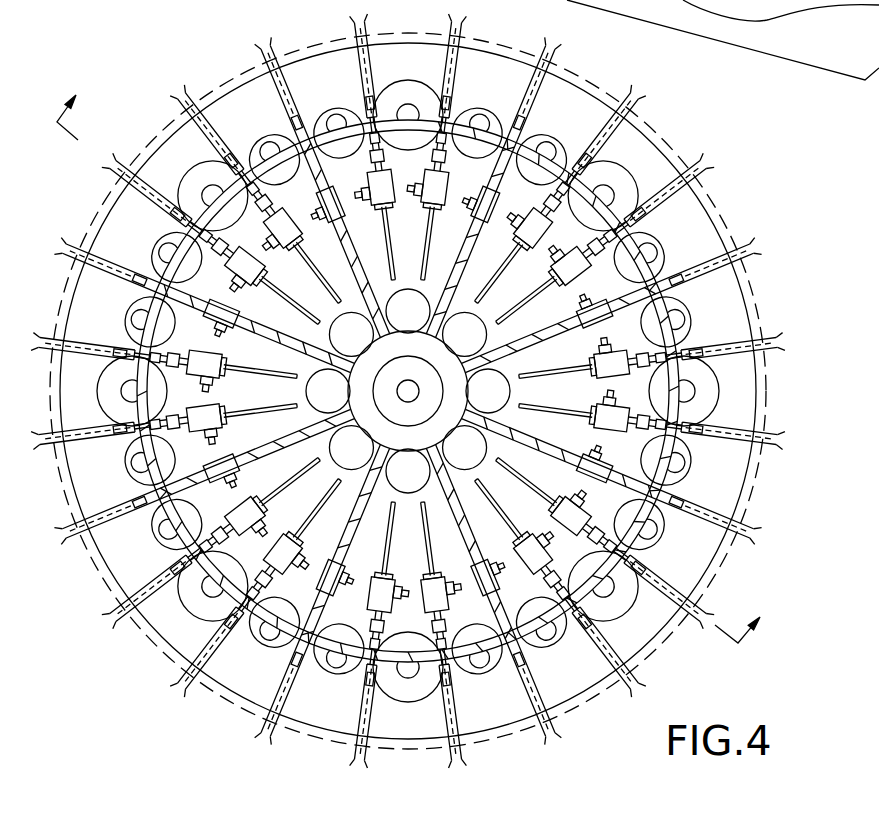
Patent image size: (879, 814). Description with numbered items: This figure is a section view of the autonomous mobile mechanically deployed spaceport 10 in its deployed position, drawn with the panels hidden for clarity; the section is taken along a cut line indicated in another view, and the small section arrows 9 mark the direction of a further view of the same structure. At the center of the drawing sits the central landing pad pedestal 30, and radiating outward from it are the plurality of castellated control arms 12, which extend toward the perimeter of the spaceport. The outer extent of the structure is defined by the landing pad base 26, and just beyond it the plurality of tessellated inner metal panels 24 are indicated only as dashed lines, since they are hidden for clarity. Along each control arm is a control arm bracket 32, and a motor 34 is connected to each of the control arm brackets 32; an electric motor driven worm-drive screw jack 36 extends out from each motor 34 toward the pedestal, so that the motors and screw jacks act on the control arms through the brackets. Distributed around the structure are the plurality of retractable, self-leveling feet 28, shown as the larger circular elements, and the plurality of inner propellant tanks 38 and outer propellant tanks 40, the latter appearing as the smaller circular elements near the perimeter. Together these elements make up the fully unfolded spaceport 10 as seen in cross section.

The section view arrows 9 is at (418, 355).
The autonomous mobile mechanically deployed spaceport 10 is at (198, 54).
The castellated control arms 12 is at (548, 46).
The tessellated inner metal panels 24 is at (712, 205).
The landing pad base 26 is at (645, 150).
The retractable, self-leveling feet 28 is at (697, 390).
The central landing pad pedestal 30 is at (668, 462).
The control arm brackets 32 is at (563, 82).
The motors 34 is at (590, 400).
The electric motor driven worm-drive screw jacks 36 is at (517, 372).
The inner propellant tanks 38 is at (380, 250).
The outer propellant tanks 40 is at (683, 322).